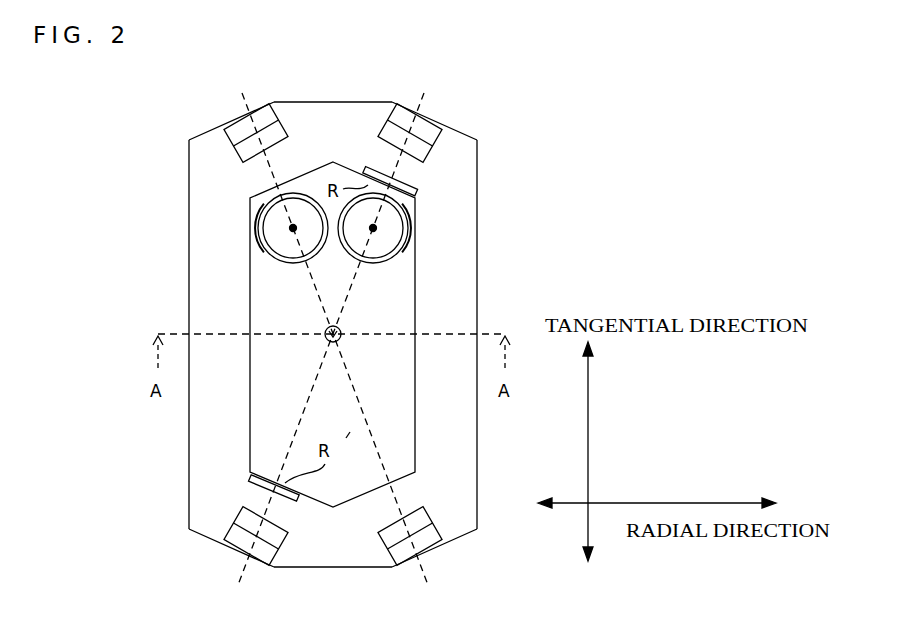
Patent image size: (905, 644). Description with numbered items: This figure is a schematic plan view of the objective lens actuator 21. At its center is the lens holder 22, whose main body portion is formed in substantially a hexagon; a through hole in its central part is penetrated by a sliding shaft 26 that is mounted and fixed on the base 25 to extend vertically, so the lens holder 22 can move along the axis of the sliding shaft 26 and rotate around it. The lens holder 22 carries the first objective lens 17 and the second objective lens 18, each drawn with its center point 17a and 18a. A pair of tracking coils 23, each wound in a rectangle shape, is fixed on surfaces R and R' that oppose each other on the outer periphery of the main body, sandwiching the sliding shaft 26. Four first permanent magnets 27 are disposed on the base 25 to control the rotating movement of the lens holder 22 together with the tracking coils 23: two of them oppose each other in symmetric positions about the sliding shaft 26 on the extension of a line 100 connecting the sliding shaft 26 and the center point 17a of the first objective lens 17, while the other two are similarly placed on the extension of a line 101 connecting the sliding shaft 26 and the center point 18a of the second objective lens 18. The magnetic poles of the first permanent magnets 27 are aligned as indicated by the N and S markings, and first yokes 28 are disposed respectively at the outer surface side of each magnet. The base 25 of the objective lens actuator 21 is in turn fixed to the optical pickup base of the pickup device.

The first objective lens 17 is at (250, 250).
The center point of the first objective lens 17a is at (291, 228).
The second objective lens 18 is at (416, 252).
The center point of the second objective lens 18a is at (375, 228).
The objective lens actuator 21 is at (512, 138).
The lens holder 22 is at (417, 414).
The tracking coils 23 is at (358, 170).
The base 25 is at (478, 268).
The sliding shaft 26 is at (324, 341).
The first permanent magnets 27 is at (228, 165).
The first yokes 28 is at (233, 124).
The line connecting the sliding shaft and center point of the first objective lens 100 is at (314, 291).
The line connecting the sliding shaft and center point of the second objective lens 101 is at (352, 291).